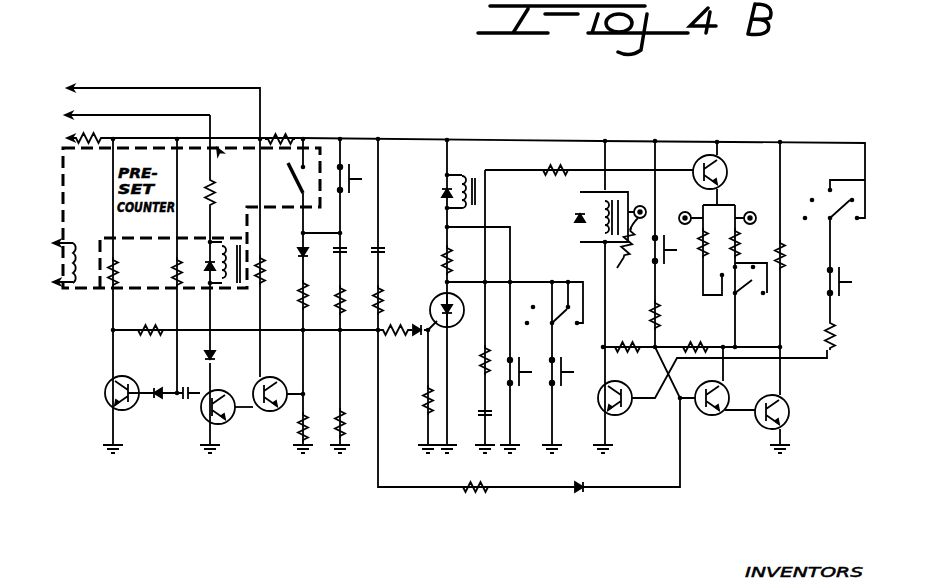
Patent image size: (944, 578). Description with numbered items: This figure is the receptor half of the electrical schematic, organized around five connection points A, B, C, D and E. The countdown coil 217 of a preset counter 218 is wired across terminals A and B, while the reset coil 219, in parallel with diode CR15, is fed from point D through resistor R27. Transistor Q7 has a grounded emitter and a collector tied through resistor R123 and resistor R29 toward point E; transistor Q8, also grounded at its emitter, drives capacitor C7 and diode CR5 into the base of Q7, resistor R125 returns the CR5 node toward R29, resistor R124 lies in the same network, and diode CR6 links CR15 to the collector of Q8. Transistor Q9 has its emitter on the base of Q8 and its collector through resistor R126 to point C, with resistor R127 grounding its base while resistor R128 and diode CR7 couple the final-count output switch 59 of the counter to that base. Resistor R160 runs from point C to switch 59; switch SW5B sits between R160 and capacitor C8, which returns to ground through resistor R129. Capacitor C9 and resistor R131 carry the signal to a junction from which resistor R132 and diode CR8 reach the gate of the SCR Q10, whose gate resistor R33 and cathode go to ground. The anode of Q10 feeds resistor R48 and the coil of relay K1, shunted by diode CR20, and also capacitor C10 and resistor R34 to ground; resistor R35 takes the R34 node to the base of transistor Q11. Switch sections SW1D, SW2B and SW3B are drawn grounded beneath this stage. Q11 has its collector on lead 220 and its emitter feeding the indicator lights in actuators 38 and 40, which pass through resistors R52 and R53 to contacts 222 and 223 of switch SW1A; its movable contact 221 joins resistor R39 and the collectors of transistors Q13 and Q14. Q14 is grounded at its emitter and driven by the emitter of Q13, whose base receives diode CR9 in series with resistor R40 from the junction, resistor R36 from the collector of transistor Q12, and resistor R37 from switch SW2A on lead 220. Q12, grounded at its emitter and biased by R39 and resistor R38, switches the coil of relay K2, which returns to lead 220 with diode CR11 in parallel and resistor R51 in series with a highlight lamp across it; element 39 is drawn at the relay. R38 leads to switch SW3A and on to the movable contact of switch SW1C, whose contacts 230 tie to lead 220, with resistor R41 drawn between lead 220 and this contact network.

The connection point C is at (71, 87).
The connection point D is at (67, 114).
The connection point E is at (65, 139).
The terminal A is at (50, 243).
The terminal B is at (48, 285).
The resistor R29 is at (108, 138).
The preset counter 218 is at (220, 147).
The resistor R160 is at (282, 136).
The lead 220 is at (590, 111).
The switch SW5B is at (355, 177).
The relay K1 is at (468, 175).
The resistor R35 is at (571, 167).
The transistor Q11 is at (726, 163).
The contacts of switch SW1C 230 is at (864, 179).
The resistor R27 is at (215, 193).
The switch 59 is at (284, 180).
The diode CR20 is at (440, 191).
The relay K2 is at (578, 207).
The actuator 38 is at (682, 212).
The actuator 40 is at (752, 212).
The diode CR7 is at (299, 253).
The capacitor C8 is at (346, 249).
The capacitor C9 is at (382, 249).
The diode CR11 is at (566, 225).
The resistor R52 is at (700, 241).
The resistor R53 is at (768, 245).
The switch SW1C is at (836, 223).
The reset coil 219 is at (232, 234).
The resistor R125 is at (172, 259).
The resistor R48 is at (441, 265).
The relay contact 39 is at (634, 238).
The resistor R41 is at (782, 251).
The countdown coil 217 is at (85, 289).
The resistor R123 is at (133, 272).
The diode CR15 is at (206, 271).
The resistor R126 is at (279, 270).
The resistor R129 is at (336, 289).
The resistor R131 is at (396, 296).
The switch SW2A is at (677, 265).
The resistor R51 is at (621, 262).
The resistor R124 is at (154, 327).
The resistor R128 is at (302, 303).
The SCR Q10 is at (432, 301).
The resistor R37 is at (654, 315).
The contact 222 is at (718, 305).
The contact 223 is at (760, 297).
The switch SW1A is at (742, 303).
The switch SW3A is at (840, 291).
The diode CR5 is at (159, 387).
The diode CR6 is at (246, 355).
The transistor Q9 is at (274, 379).
The diode CR8 is at (412, 335).
The resistor R34 is at (482, 363).
The switch SW1D is at (560, 325).
The resistor R36 is at (640, 345).
The movable contact 221 is at (745, 296).
The resistor R38 is at (832, 343).
The transistor Q7 is at (105, 397).
The capacitor C7 is at (180, 401).
The resistor R132 is at (400, 355).
The capacitor C10 is at (480, 415).
The transistor Q12 is at (642, 405).
The resistor R39 is at (714, 353).
The transistor Q13 is at (772, 379).
The transistor Q14 is at (790, 409).
The transistor Q8 is at (222, 427).
The resistor R127 is at (292, 423).
The resistor R33 is at (424, 407).
The switch SW2B is at (520, 387).
The switch SW3B is at (564, 387).
The resistor R40 is at (500, 513).
The diode CR9 is at (582, 495).